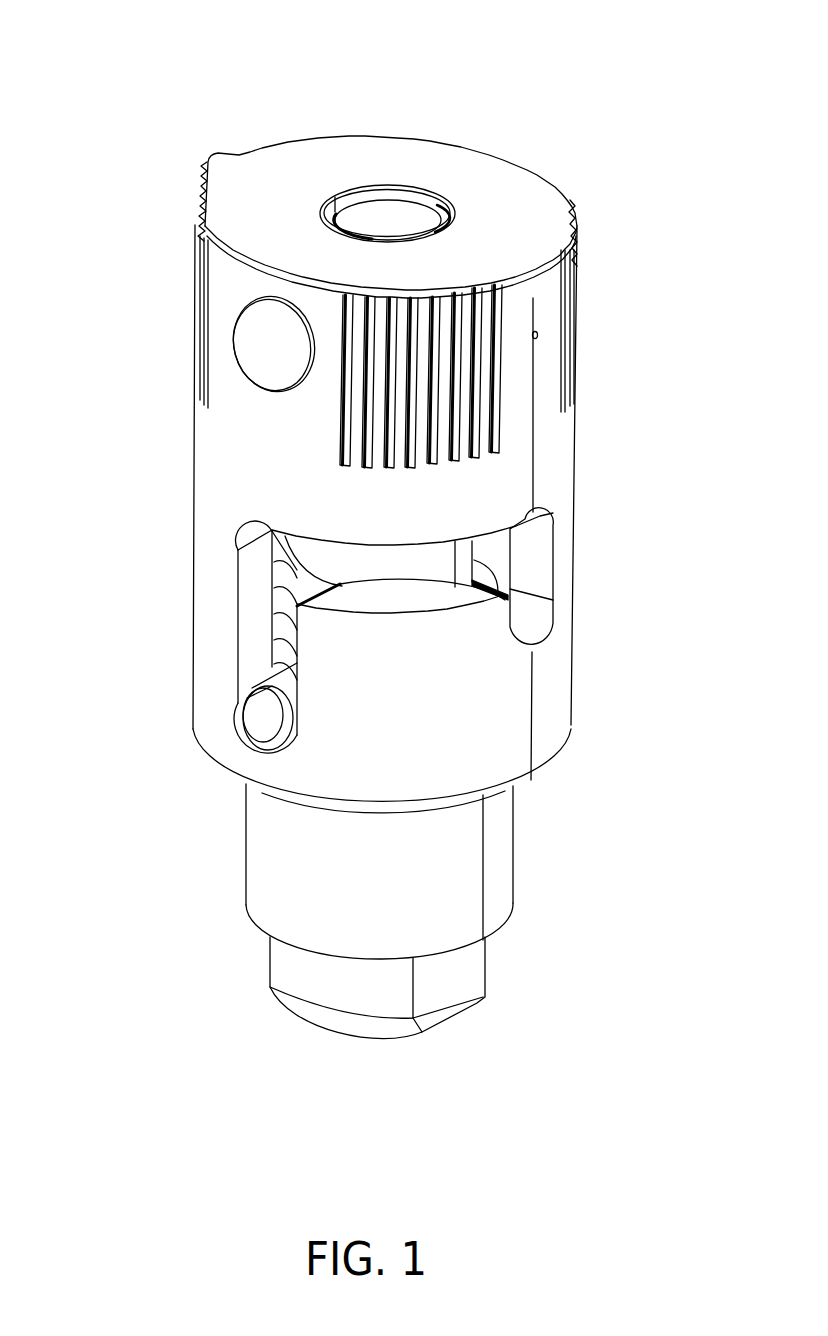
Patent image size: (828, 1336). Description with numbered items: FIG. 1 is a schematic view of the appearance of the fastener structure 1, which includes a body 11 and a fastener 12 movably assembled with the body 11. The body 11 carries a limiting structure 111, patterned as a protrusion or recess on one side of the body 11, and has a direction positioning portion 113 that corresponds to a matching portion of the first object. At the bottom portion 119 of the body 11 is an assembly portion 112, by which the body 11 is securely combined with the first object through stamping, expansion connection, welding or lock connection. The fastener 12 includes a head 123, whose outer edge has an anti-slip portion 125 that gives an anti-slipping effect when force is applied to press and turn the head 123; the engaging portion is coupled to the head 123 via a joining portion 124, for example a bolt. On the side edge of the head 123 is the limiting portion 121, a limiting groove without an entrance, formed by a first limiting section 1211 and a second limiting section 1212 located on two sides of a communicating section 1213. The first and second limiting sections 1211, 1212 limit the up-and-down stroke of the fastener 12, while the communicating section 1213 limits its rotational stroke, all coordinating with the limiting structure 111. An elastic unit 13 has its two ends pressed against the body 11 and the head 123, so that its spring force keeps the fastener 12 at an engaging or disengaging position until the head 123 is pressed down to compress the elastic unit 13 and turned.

The fastener structure 1 is at (68, 23).
The body 11 is at (248, 866).
The limiting structure 111 is at (258, 716).
The assembly portion 112 is at (305, 983).
The direction positioning portion 113 is at (452, 985).
The bottom portion 119 is at (467, 949).
The fastener 12 is at (429, 106).
The limiting portion 121 is at (226, 591).
The first limiting section 1211 is at (261, 748).
The second limiting section 1212 is at (522, 625).
The communicating section 1213 is at (510, 543).
The head 123 is at (277, 172).
The joining portion 124 is at (265, 345).
The anti-slip portion 125 is at (440, 382).
The elastic unit 13 is at (283, 630).